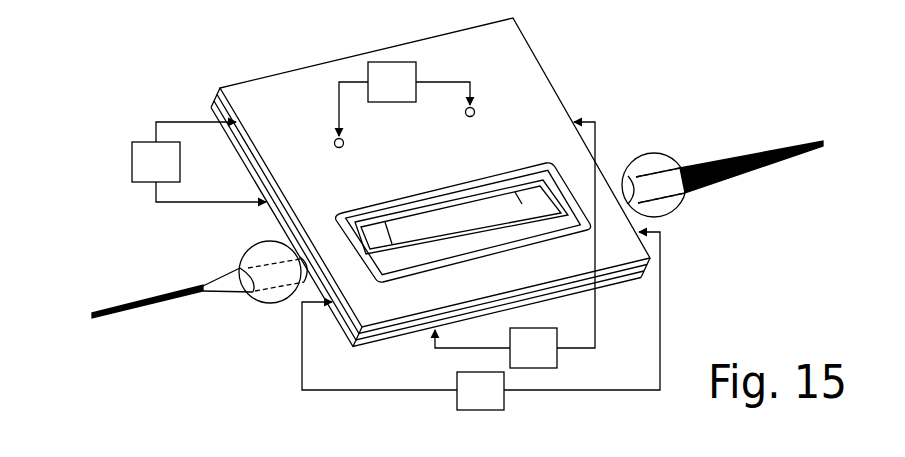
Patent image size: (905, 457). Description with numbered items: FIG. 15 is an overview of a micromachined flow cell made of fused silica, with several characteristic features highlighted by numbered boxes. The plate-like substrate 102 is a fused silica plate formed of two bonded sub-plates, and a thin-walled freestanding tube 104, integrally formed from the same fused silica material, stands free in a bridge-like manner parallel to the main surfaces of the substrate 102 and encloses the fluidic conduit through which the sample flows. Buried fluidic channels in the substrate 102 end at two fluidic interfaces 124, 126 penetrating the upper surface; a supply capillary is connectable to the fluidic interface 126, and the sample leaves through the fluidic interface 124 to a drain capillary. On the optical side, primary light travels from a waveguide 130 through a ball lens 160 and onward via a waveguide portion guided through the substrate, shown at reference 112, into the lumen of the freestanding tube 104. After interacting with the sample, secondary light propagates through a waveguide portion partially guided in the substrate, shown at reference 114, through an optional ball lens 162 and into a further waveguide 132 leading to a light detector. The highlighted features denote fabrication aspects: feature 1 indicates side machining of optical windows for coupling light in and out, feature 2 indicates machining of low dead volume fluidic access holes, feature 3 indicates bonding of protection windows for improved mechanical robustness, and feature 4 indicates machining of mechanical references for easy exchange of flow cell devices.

The feature 1 is at (481, 321).
The feature 2 is at (404, 99).
The feature 3 is at (199, 162).
The feature 4 is at (515, 245).
The plate-like substrate 102 is at (532, 153).
The freestanding tube 104 is at (465, 228).
The part of the further waveguide guided through the substrate 112 is at (235, 285).
The part of the waveguide guided through the substrate 114 is at (692, 175).
The fluidic interface 124 is at (475, 109).
The fluidic interface 126 is at (333, 141).
The waveguide 130 is at (137, 300).
The further waveguide 132 is at (787, 148).
The ball lens 160 is at (275, 287).
The ball lens 162 is at (665, 202).